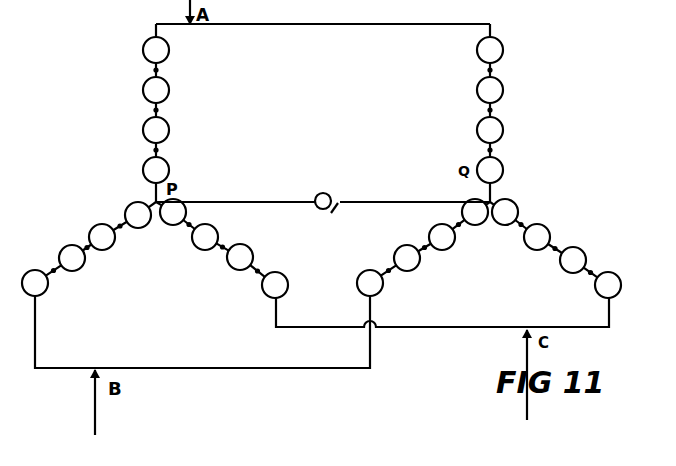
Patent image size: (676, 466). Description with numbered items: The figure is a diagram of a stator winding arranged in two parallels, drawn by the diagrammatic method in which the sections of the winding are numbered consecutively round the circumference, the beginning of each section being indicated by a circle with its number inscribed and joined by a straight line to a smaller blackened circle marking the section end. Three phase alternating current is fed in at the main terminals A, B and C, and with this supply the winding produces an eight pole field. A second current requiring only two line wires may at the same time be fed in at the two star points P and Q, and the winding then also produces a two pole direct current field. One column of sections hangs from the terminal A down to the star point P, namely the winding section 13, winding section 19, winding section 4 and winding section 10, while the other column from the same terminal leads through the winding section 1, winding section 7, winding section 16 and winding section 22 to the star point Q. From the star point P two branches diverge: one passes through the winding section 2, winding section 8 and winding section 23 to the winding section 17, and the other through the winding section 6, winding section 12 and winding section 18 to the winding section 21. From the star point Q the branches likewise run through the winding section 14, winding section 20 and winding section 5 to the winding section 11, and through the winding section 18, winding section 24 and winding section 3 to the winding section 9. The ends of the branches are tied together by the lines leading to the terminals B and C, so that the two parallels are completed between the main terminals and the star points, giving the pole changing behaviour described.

The winding section 1 is at (490, 50).
The winding section 2 is at (138, 215).
The winding section 3 is at (573, 260).
The winding section 4 is at (156, 130).
The winding section 5 is at (407, 258).
The winding section 6 is at (173, 212).
The winding section 7 is at (490, 90).
The winding section 8 is at (102, 237).
The winding section 9 is at (608, 285).
The winding section 10 is at (156, 170).
The winding section 11 is at (370, 283).
The winding section 12 is at (205, 237).
The winding section 13 is at (156, 50).
The winding section 14 is at (475, 212).
The winding section 16 is at (490, 130).
The winding section 17 is at (35, 283).
The winding section 18 is at (372, 234).
The winding section 19 is at (156, 90).
The winding section 20 is at (442, 237).
The winding section 21 is at (275, 285).
The winding section 22 is at (490, 170).
The winding section 23 is at (72, 258).
The winding section 24 is at (537, 237).